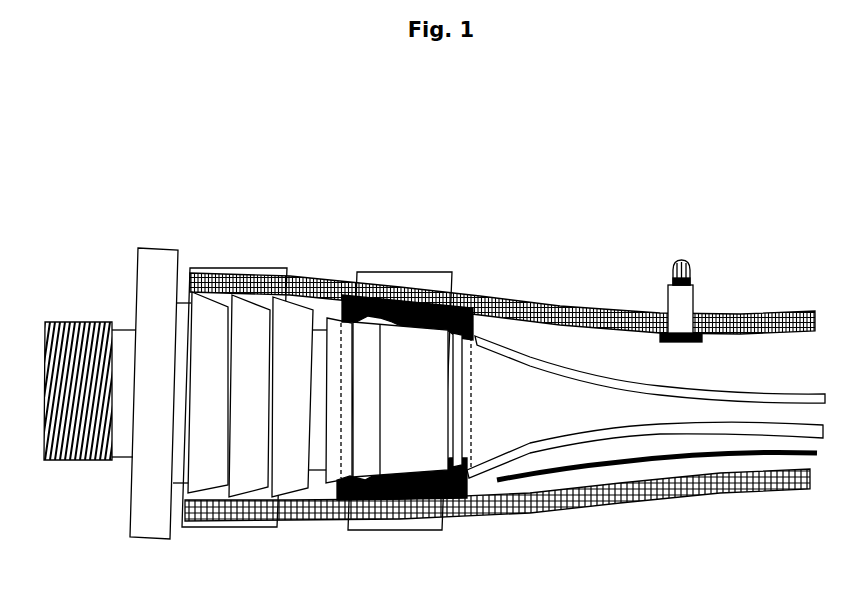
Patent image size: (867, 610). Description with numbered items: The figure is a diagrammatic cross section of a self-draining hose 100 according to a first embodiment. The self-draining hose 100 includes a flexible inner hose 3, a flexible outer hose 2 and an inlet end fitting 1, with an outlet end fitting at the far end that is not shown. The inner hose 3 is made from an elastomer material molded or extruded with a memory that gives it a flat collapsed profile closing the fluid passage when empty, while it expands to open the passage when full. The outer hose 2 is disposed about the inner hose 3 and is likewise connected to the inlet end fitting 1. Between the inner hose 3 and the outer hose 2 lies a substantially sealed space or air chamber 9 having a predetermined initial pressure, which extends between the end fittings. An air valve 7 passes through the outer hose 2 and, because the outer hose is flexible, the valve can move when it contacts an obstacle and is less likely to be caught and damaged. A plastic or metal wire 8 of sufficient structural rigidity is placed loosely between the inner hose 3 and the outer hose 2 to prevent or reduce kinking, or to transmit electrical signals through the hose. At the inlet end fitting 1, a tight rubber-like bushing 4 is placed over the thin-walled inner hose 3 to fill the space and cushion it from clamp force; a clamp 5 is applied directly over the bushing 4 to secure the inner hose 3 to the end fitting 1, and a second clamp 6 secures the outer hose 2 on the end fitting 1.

The self-draining hose 100 is at (169, 112).
The inlet end fitting 1 is at (154, 393).
The outer hose 2 is at (497, 284).
The inner hose 3 is at (626, 366).
The bushing 4 is at (483, 405).
The clamp 5 is at (400, 542).
The second clamp 6 is at (232, 539).
The air valve 7 is at (704, 298).
The plastic or metal wire 8 is at (672, 471).
The air chamber 9 is at (777, 365).